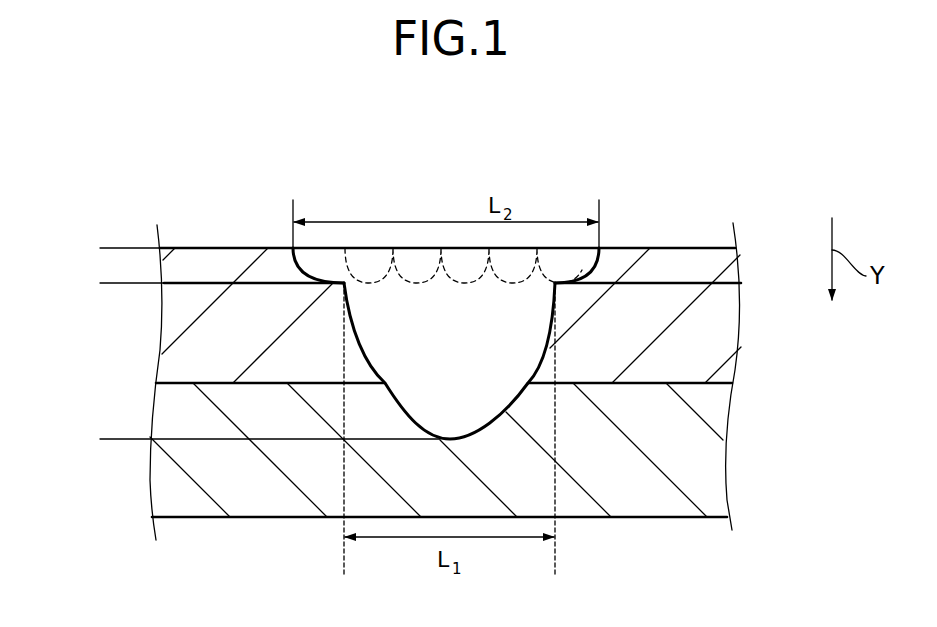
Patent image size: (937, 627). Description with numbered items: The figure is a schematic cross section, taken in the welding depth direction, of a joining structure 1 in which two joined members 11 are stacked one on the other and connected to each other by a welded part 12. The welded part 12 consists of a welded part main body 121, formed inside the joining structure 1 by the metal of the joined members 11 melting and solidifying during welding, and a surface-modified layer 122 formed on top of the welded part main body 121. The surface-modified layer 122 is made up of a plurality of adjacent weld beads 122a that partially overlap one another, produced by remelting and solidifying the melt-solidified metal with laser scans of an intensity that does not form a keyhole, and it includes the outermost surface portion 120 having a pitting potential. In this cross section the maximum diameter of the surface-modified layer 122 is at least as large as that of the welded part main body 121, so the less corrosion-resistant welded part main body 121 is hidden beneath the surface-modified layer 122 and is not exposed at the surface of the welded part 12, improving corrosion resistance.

The joining structure 1 is at (709, 186).
The joined members 11 is at (712, 315).
The welded part 12 is at (540, 371).
The outermost surface portion 120 is at (451, 236).
The welded part main body 121 is at (98, 283).
The surface-modified layer 122 is at (98, 248).
The weld beads 122a is at (565, 258).